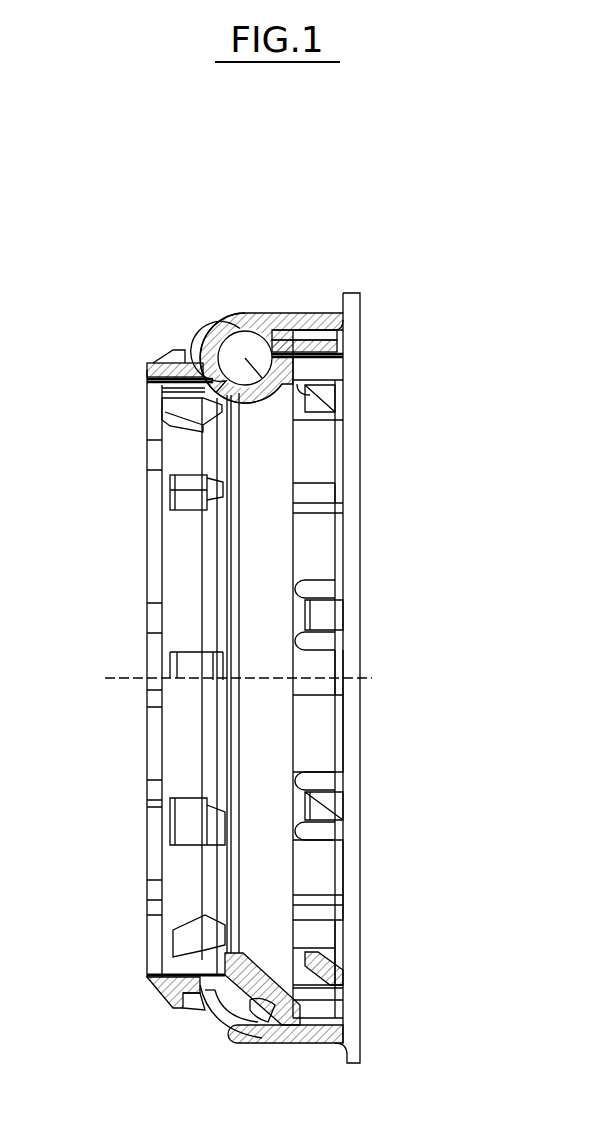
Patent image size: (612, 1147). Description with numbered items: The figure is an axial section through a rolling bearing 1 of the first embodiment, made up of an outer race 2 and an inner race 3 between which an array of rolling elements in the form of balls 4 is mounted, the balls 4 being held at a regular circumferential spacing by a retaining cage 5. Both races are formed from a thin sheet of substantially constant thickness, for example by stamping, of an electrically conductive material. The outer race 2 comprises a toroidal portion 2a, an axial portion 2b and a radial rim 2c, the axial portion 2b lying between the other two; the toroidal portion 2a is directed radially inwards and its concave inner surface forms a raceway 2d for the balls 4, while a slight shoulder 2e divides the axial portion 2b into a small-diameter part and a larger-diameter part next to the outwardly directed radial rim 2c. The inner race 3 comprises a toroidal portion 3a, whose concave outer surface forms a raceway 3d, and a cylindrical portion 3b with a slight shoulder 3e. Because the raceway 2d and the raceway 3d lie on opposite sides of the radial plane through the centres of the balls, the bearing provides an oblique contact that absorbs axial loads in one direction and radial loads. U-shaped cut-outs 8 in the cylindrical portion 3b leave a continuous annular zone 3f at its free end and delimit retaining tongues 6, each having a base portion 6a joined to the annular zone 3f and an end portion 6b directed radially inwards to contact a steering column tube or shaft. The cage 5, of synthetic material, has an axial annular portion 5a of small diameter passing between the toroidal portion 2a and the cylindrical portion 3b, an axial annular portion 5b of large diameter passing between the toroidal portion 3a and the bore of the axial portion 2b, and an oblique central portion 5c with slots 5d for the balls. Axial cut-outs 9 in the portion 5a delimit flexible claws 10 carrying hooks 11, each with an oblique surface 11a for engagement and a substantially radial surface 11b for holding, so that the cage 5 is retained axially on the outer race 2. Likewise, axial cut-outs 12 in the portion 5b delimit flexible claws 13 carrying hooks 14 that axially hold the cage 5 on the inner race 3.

The rolling bearing 1 is at (96, 812).
The outer race 2 is at (307, 308).
The toroidal portion 2a is at (197, 322).
The axial portion 2b is at (290, 322).
The radial rim 2c is at (362, 300).
The raceway 2d is at (233, 343).
The shoulder 2e is at (257, 325).
The inner race 3 is at (258, 400).
The toroidal portion 3a is at (300, 1010).
The cylindrical portion 3b is at (170, 950).
The raceway 3d is at (313, 968).
The shoulder 3e is at (245, 1005).
The continuous annular zone 3f is at (165, 663).
The balls 4 is at (300, 378).
The retaining cage 5 is at (323, 332).
The axial annular portion of small diameter 5a is at (145, 368).
The axial annular portion of large diameter 5b is at (337, 347).
The oblique central portion 5c is at (268, 1018).
The slots 5d is at (343, 358).
The retaining tongues 6 is at (157, 422).
The base portion 6a is at (176, 492).
The end portion 6b is at (170, 480).
The cut-outs 8 is at (223, 535).
The cut-outs 9 is at (150, 620).
The flexible claws 10 is at (147, 983).
The hook 11 is at (165, 1012).
The oblique surface 11a is at (160, 1000).
The substantially radial surface 11b is at (200, 995).
The cut-outs 12 is at (338, 638).
The flexible claws 13 is at (328, 802).
The hook 14 is at (327, 988).